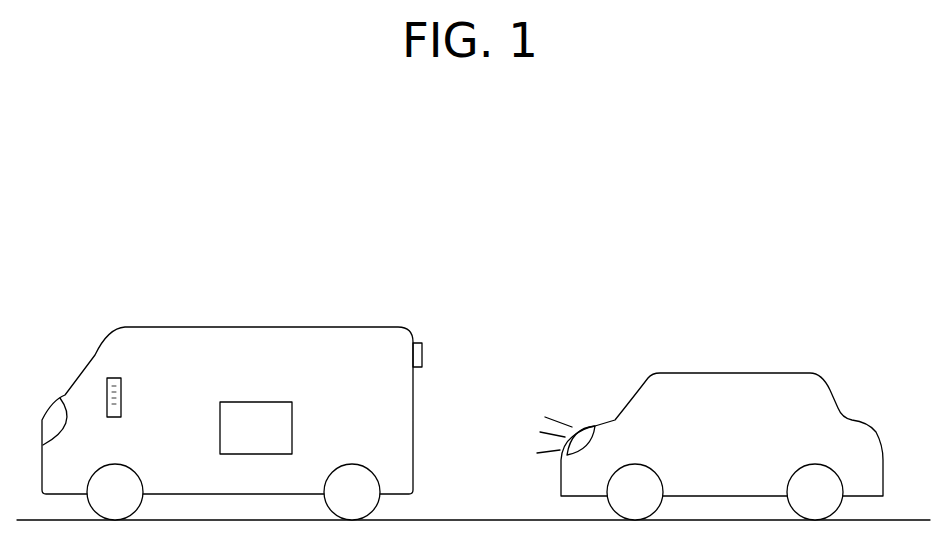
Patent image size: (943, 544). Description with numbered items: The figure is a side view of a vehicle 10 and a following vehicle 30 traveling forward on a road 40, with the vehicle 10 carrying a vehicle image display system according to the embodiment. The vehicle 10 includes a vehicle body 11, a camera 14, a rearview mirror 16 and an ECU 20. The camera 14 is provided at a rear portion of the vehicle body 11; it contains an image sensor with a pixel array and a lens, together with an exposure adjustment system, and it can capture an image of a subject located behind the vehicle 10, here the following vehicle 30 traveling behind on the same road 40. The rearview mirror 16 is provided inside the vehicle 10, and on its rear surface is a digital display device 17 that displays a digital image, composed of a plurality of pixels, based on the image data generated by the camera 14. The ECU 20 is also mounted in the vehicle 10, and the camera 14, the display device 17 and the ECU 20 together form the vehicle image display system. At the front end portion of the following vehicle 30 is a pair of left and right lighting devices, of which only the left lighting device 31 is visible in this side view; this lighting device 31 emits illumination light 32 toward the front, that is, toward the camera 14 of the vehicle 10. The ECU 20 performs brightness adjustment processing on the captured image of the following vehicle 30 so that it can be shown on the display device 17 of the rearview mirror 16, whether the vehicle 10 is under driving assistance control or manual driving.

The vehicle 10 is at (280, 374).
The vehicle body 11 is at (218, 326).
The camera 14 is at (424, 348).
The rearview mirror 16 is at (113, 377).
The digital display device 17 is at (123, 397).
The ECU 20 is at (292, 428).
The following vehicle 30 is at (700, 395).
The lighting device 31 is at (583, 438).
The illumination light 32 is at (555, 415).
The road 40 is at (480, 519).